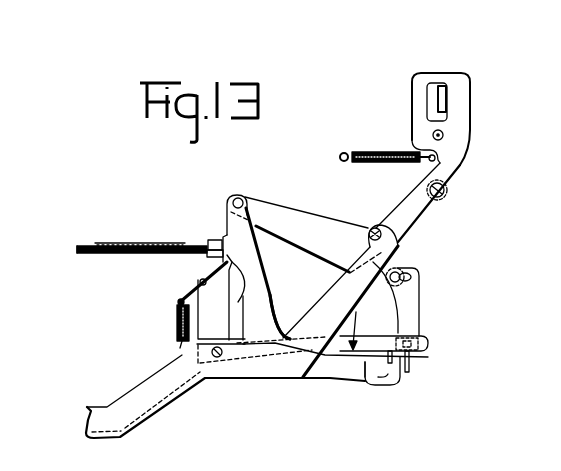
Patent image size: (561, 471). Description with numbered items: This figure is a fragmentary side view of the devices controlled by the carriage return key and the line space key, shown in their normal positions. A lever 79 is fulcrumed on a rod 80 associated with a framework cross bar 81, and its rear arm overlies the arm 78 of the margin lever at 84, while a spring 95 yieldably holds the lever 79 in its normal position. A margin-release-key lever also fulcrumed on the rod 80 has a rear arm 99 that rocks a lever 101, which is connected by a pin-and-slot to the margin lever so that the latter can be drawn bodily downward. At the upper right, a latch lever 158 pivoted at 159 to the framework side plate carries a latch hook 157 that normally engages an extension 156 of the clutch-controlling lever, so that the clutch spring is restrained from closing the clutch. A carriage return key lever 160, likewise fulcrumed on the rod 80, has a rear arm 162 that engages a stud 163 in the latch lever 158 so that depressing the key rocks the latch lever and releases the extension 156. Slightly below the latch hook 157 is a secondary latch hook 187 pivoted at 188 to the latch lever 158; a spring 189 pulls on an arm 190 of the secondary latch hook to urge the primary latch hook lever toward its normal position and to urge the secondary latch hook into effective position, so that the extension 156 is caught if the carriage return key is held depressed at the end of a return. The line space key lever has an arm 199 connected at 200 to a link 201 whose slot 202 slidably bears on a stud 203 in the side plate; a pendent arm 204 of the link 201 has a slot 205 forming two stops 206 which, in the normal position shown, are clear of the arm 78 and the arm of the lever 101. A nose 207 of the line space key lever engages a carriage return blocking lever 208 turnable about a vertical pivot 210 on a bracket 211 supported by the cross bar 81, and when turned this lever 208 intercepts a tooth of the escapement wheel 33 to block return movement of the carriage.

The escapement wheel 33 is at (115, 240).
The arm 78 is at (426, 376).
The lever 79 is at (363, 331).
The rod 80 is at (219, 358).
The framework cross bar 81 is at (250, 285).
The overlying point 84 is at (429, 343).
The spring 95 is at (176, 325).
The rear arm 99 is at (395, 380).
The lever 101 is at (368, 378).
The extension 156 is at (445, 104).
The latch hook 157 is at (453, 75).
The latch lever 158 is at (466, 165).
The pivot 159 is at (446, 190).
The carriage return key lever 160 is at (142, 388).
The rear arm 162 is at (350, 295).
The stud 163 is at (370, 229).
The secondary latch hook 187 is at (419, 79).
The pivot 188 is at (443, 136).
The spring 189 is at (400, 153).
The arm 190 is at (420, 163).
The arm 199 is at (278, 300).
The connection 200 is at (241, 197).
The link 201 is at (285, 220).
The slot 202 is at (413, 282).
The stud 203 is at (410, 273).
The pendent arm 204 is at (421, 306).
The slot 205 is at (420, 328).
The stops 206 is at (420, 360).
The nose 207 is at (226, 235).
The carriage return blocking lever 208 is at (82, 254).
The vertical pivot 210 is at (207, 244).
The bracket 211 is at (225, 263).